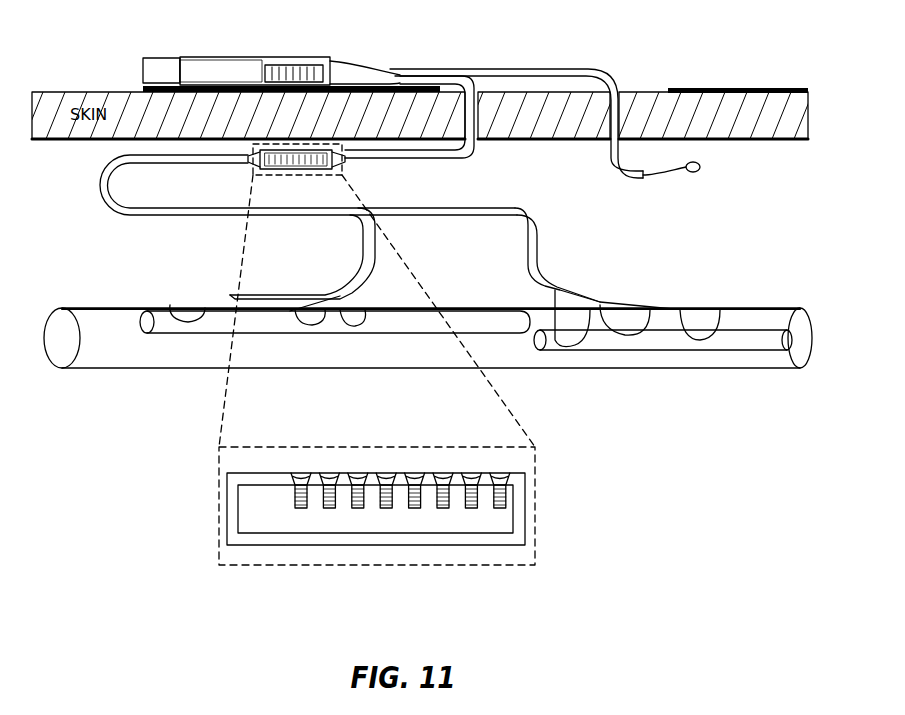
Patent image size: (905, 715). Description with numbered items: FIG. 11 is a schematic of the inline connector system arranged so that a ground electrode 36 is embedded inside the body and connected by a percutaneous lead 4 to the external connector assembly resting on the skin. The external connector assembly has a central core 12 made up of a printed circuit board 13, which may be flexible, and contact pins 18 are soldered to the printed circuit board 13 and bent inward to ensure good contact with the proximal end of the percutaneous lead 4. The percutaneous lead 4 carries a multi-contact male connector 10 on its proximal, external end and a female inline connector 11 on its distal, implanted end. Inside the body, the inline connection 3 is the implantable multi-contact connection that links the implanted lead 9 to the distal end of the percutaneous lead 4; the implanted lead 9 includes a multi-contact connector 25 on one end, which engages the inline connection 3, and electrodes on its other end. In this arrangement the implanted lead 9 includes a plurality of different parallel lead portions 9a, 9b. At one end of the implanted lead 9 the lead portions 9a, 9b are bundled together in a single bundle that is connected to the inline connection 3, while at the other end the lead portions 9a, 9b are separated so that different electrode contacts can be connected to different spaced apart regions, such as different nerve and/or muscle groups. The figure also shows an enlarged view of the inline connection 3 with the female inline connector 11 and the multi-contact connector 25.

The inline connection 3 is at (274, 171).
The percutaneous lead 4 is at (428, 74).
The implanted lead 9 is at (100, 200).
The lead portion 9a is at (363, 233).
The lead portion 9b is at (538, 232).
The multi-contact male connector 10 is at (377, 66).
The female inline connector 11 is at (470, 547).
The central core 12 is at (213, 66).
The printed circuit board 13 is at (143, 63).
The contact pins 18 is at (293, 65).
The multi-contact connector 25 is at (265, 522).
The ground electrode 36 is at (592, 72).